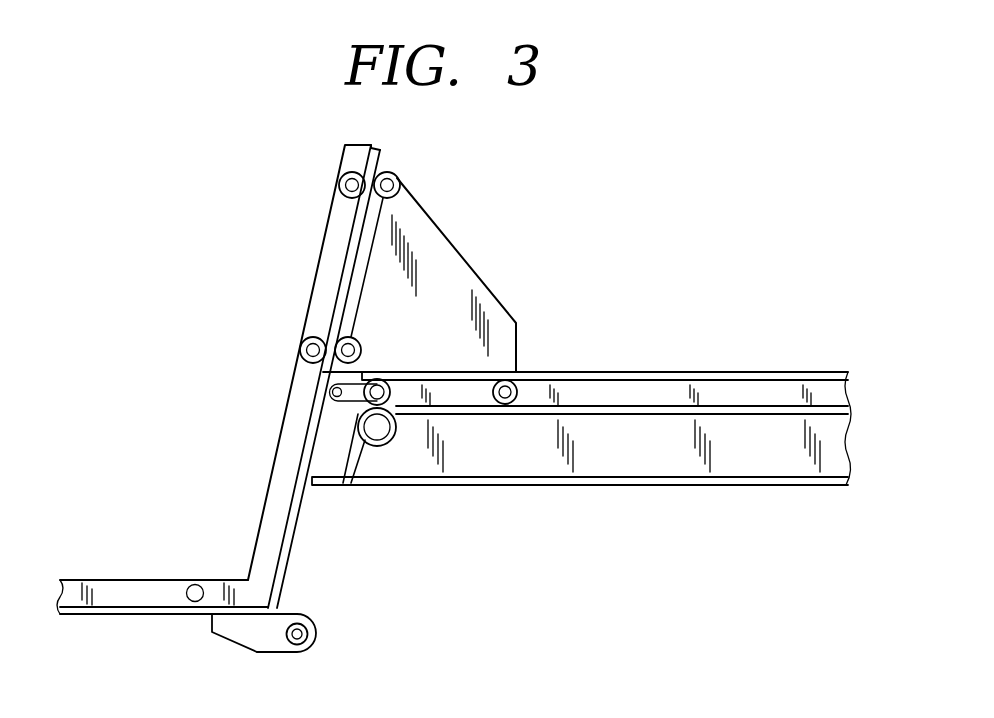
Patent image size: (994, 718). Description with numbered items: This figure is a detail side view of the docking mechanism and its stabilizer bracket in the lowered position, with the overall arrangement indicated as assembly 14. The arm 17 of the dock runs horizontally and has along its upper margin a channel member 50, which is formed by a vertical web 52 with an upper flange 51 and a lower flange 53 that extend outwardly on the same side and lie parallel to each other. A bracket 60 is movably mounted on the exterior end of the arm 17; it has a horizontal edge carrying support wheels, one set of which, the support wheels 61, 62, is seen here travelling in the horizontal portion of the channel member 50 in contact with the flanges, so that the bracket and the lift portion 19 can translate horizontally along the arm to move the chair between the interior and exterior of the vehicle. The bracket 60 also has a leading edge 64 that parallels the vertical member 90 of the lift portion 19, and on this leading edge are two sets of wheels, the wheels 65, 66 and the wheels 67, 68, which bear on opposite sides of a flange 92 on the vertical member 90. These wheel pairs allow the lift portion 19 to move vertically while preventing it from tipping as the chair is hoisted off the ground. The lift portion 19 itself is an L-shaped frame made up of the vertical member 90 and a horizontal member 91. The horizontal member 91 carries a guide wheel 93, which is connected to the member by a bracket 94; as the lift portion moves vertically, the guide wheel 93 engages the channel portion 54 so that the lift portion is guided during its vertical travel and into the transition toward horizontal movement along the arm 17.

The folding frame assembly 14 is at (396, 548).
The arm 17 is at (724, 486).
The lift portion 19 is at (267, 482).
The channel member 50 is at (589, 398).
The upper flange 51 is at (692, 371).
The vertical web 52 is at (740, 392).
The lower flange 53 is at (810, 406).
The channel portion 54 is at (328, 428).
The bracket 60 is at (433, 283).
The support wheel 61 is at (390, 384).
The support wheel 62 is at (513, 380).
The leading edge 64 is at (360, 287).
The wheel 65 is at (360, 343).
The wheel 66 is at (303, 342).
The wheel 67 is at (339, 184).
The wheel 68 is at (399, 180).
The vertical member 90 is at (290, 557).
The horizontal member 91 is at (131, 615).
The flange 92 is at (296, 524).
The guide wheel 93 is at (308, 640).
The bracket 94 is at (242, 633).